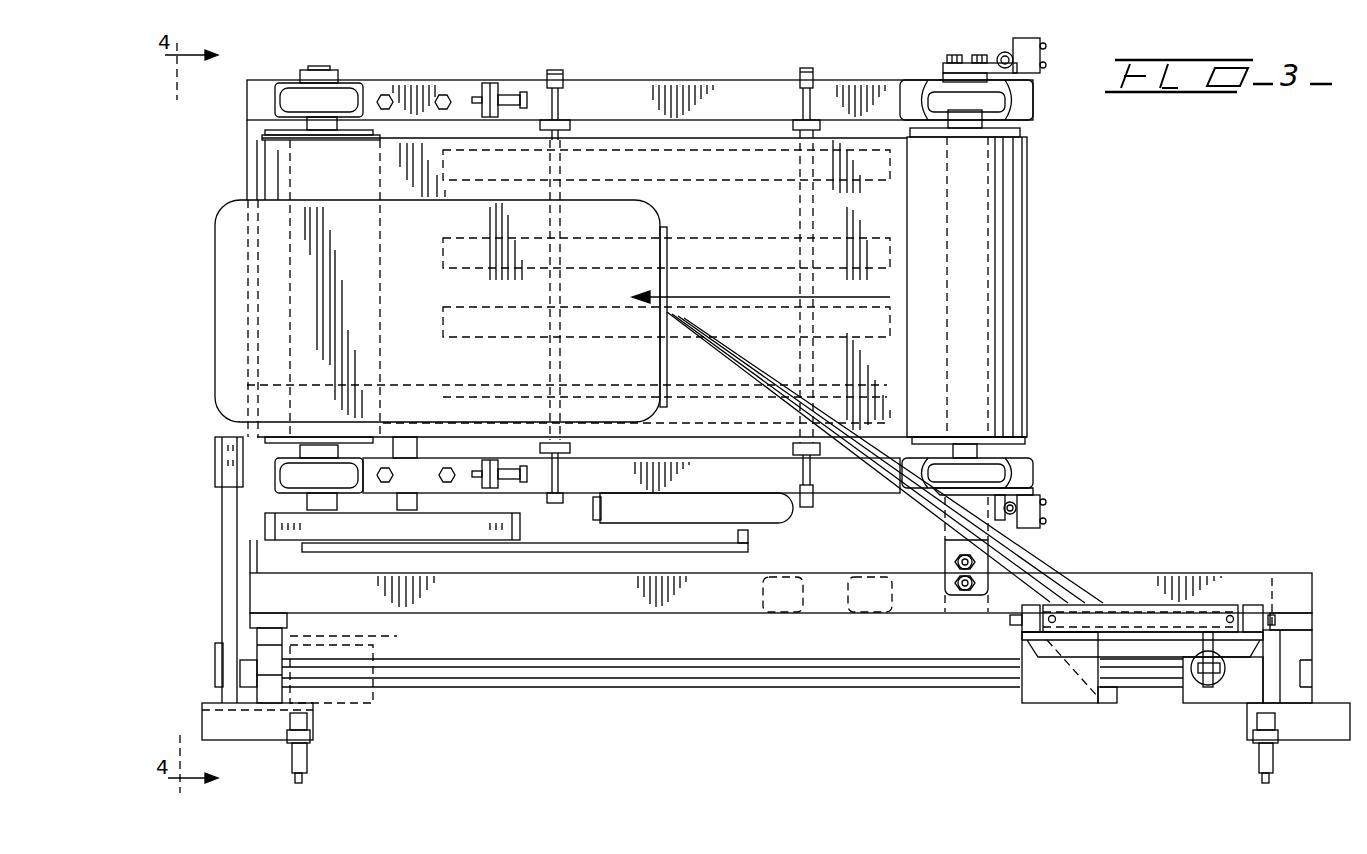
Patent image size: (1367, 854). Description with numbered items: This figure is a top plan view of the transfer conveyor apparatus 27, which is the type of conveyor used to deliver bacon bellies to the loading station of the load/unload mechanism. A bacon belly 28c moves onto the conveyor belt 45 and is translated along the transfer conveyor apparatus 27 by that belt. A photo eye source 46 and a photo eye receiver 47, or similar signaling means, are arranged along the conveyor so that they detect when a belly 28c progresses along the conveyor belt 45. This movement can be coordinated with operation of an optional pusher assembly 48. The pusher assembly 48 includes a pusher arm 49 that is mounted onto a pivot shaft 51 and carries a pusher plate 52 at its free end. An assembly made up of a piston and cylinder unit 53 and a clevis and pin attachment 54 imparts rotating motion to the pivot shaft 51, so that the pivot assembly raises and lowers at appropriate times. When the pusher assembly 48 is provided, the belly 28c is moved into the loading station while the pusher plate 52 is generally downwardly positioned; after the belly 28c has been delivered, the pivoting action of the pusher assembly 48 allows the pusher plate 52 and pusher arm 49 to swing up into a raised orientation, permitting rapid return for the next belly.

The transfer conveyor apparatus 27 is at (1103, 166).
The bacon belly 28c is at (427, 253).
The conveyor belt 45 is at (1022, 238).
The photo eye source 46 is at (1032, 38).
The photo eye receiver 47 is at (1042, 508).
The pusher assembly 48 is at (1058, 557).
The pusher arm 49 is at (920, 507).
The pivot shaft 51 is at (1140, 605).
The pusher plate 52 is at (667, 250).
The piston and cylinder unit 53 is at (1195, 693).
The clevis and pin attachment 54 is at (1217, 683).